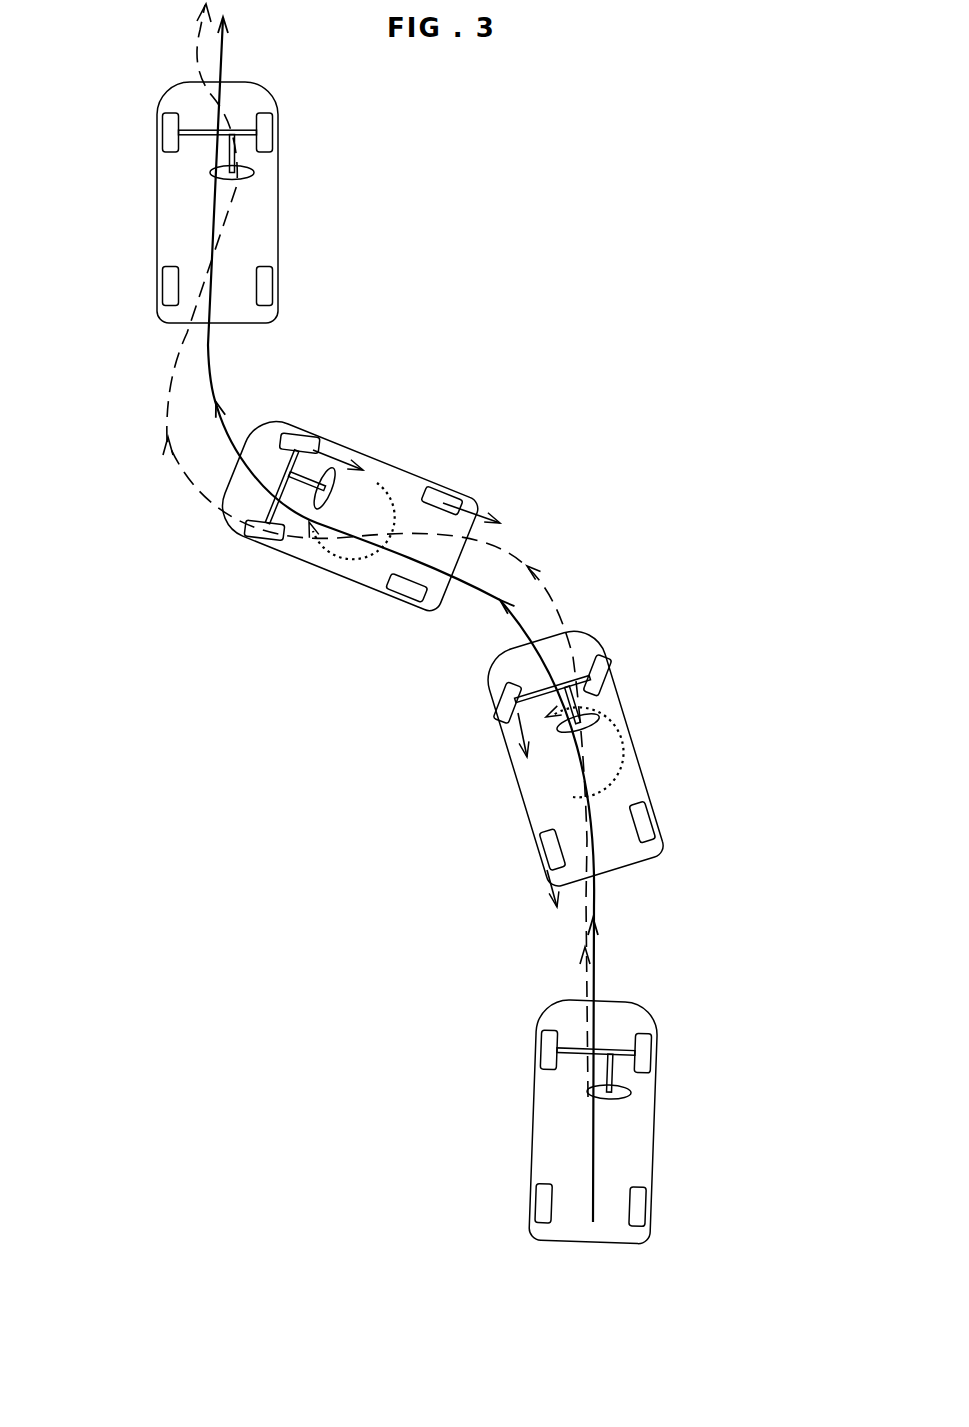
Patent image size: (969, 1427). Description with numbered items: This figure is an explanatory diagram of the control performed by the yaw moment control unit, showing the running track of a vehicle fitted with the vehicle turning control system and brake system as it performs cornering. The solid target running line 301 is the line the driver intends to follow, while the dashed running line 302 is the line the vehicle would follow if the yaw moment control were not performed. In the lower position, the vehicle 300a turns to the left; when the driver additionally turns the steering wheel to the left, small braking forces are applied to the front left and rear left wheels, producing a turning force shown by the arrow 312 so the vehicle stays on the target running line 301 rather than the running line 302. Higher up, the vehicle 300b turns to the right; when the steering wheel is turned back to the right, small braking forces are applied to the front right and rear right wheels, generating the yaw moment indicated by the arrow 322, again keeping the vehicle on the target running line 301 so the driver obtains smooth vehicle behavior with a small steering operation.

The vehicle turning to the left 300a is at (634, 713).
The vehicle turning to the right 300b is at (383, 457).
The target running line 301 is at (488, 597).
The running line without yaw moment control 302 is at (560, 594).
The arrow indicating turning force (yaw moment) 312 is at (630, 773).
The arrow indicating turning force (yaw moment) 322 is at (337, 574).